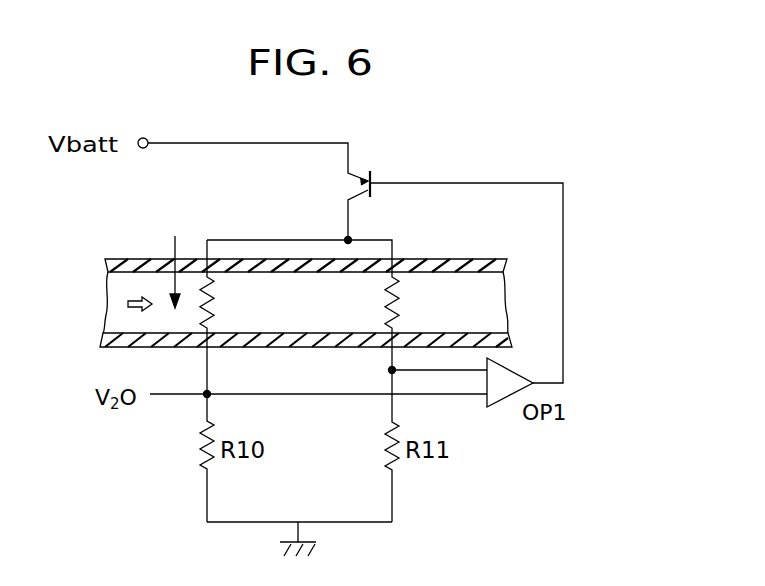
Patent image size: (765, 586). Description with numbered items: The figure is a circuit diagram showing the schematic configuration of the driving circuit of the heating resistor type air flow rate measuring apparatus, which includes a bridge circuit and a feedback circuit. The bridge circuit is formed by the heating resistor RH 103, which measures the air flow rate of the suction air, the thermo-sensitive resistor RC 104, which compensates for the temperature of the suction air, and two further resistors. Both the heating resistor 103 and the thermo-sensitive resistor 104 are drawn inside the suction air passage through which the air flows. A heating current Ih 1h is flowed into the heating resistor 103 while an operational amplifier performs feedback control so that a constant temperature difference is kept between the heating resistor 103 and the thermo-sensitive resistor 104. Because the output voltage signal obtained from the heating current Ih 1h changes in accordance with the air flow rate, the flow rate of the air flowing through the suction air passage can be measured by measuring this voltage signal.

The heating current 1h is at (176, 260).
The heating resistor 103 is at (243, 333).
The thermo-sensitive resistor 104 is at (429, 345).